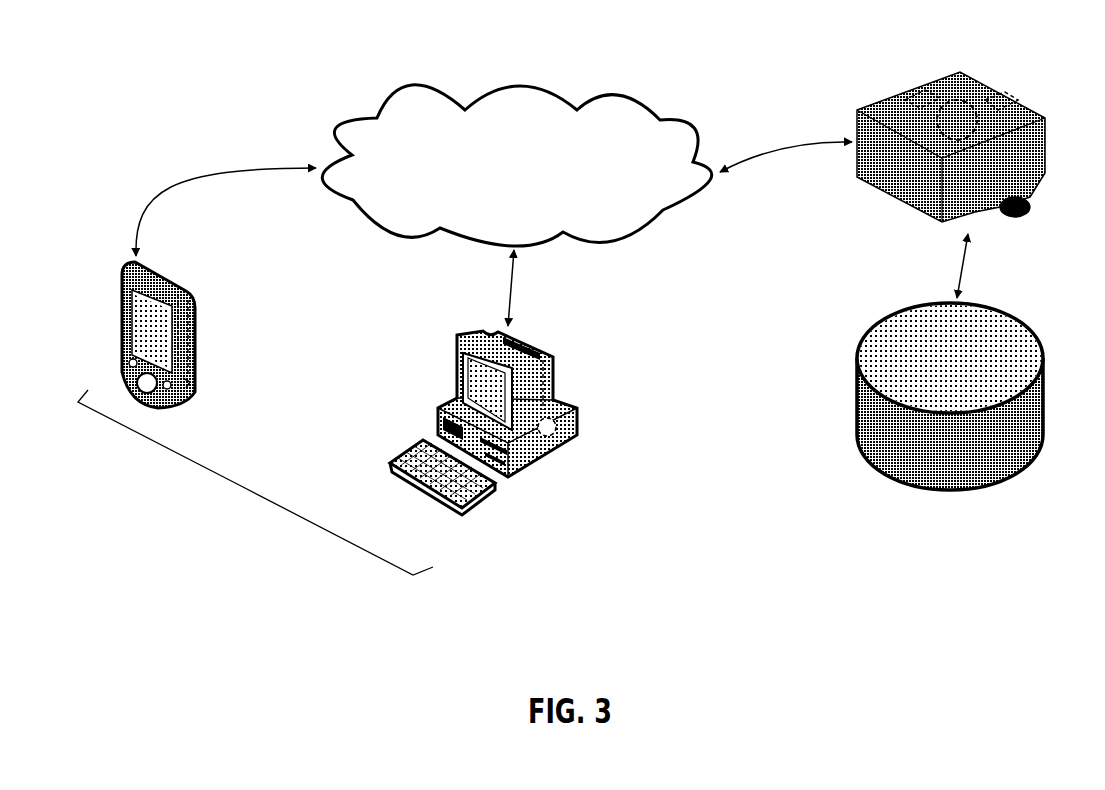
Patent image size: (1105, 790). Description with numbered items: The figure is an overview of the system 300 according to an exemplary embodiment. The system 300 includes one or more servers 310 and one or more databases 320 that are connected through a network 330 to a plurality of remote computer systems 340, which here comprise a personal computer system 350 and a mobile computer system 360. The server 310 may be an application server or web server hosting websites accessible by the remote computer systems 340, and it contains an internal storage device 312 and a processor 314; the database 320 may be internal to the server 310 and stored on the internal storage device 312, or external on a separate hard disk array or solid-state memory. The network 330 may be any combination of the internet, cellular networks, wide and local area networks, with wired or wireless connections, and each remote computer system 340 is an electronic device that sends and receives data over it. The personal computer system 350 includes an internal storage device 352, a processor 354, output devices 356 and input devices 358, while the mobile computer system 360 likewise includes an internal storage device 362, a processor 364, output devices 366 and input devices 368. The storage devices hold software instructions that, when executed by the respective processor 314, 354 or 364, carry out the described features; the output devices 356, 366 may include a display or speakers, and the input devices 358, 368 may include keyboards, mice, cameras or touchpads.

The system 300 is at (245, 56).
The server 310 is at (950, 120).
The internal storage device 312 is at (1000, 106).
The processor 314 is at (922, 93).
The database 320 is at (863, 373).
The network 330 is at (643, 102).
The remote computer system 340 is at (243, 487).
The personal computer system 350 is at (487, 395).
The internal storage device 352 is at (578, 418).
The processor 354 is at (538, 358).
The output device 356 is at (485, 392).
The input device 358 is at (400, 460).
The mobile computer system 360 is at (177, 329).
The internal storage device 362 is at (198, 372).
The processor 364 is at (193, 298).
The output device 366 is at (153, 322).
The input device 368 is at (120, 372).